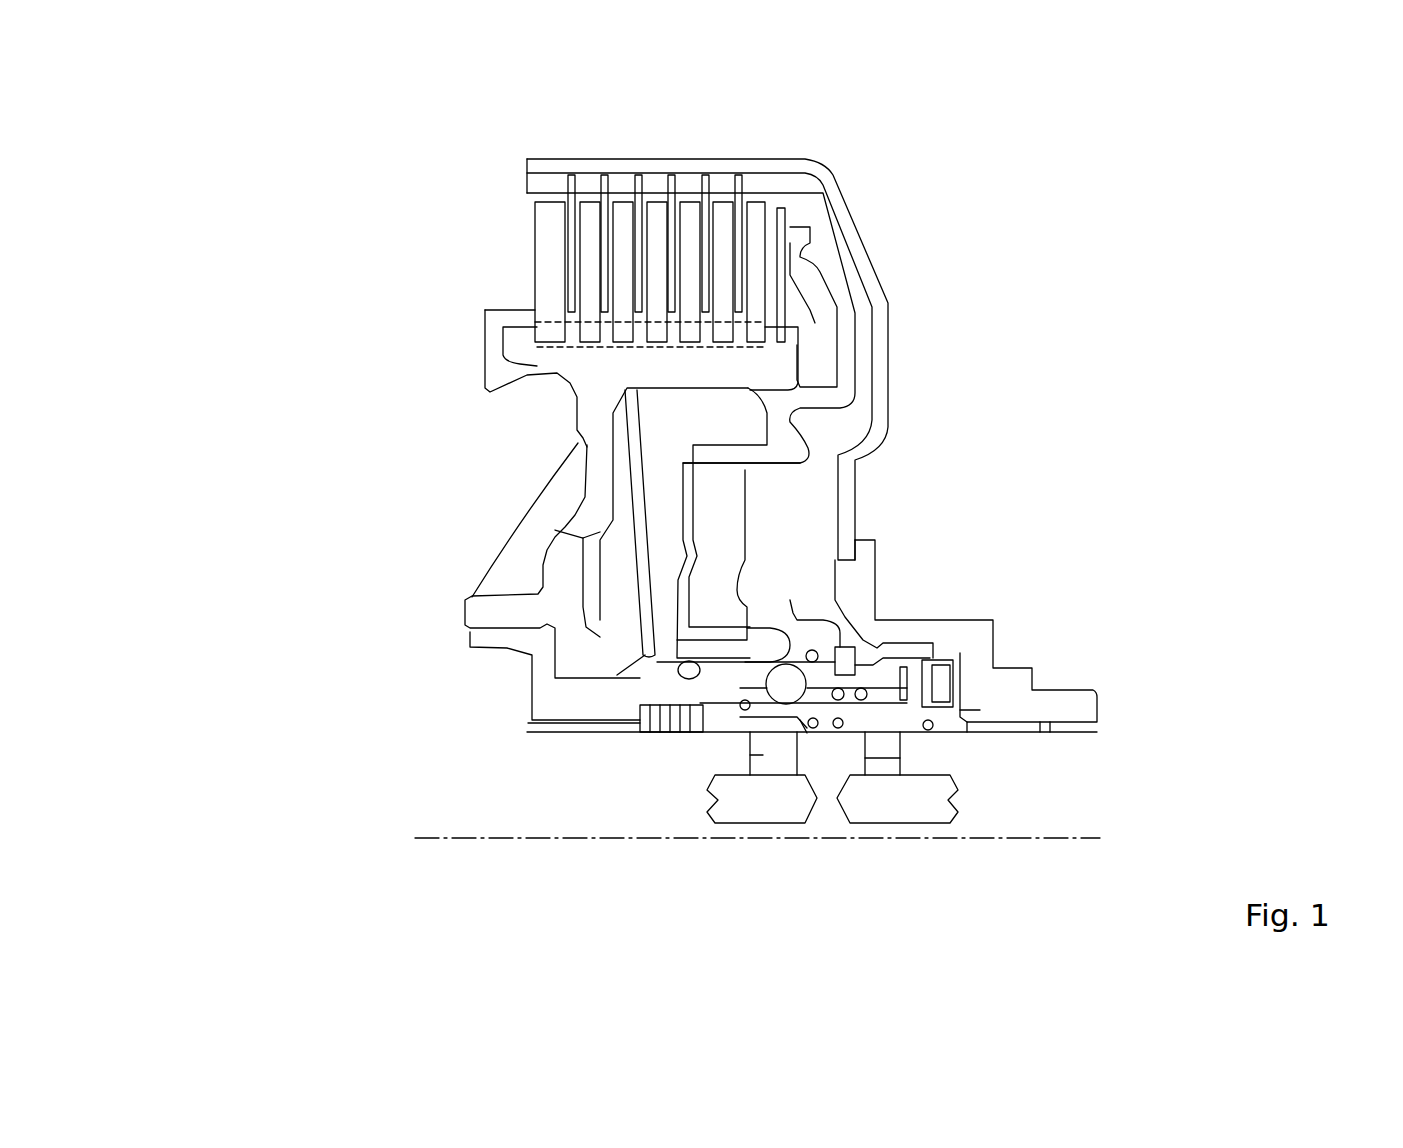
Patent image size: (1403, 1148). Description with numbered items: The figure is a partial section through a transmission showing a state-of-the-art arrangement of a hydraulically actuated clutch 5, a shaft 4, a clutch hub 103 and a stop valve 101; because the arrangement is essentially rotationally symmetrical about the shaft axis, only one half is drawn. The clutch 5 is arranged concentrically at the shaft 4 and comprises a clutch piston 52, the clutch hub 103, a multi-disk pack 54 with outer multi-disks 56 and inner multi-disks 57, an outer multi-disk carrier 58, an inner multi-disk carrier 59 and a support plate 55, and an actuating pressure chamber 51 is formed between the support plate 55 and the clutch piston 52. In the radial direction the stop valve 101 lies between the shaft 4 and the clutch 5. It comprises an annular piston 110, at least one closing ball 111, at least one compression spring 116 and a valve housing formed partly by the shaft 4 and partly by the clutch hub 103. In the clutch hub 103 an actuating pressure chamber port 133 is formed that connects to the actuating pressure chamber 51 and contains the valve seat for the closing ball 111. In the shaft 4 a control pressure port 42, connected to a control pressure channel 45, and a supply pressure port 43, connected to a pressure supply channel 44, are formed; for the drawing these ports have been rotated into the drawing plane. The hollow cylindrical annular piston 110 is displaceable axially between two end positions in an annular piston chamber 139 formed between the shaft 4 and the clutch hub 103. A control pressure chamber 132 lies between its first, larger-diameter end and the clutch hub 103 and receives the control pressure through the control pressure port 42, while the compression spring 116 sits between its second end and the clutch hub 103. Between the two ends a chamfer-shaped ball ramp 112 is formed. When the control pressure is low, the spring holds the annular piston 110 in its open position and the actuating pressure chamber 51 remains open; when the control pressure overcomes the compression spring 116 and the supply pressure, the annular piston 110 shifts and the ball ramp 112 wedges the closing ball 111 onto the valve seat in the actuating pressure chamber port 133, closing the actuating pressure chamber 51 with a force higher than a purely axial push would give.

The shaft 4 is at (1030, 768).
The hydraulically actuated clutch 5 is at (893, 470).
The control pressure port 42 is at (890, 758).
The supply pressure port 43 is at (763, 755).
The pressure supply channel 44 is at (760, 803).
The control pressure channel 45 is at (908, 807).
The actuating pressure chamber 51 is at (690, 635).
The clutch piston 52 is at (690, 567).
The multi-disk pack 54 is at (542, 213).
The support plate 55 is at (730, 520).
The outer multi-disks 56 is at (660, 213).
The inner multi-disks 57 is at (757, 215).
The outer multi-disk carrier 58 is at (878, 333).
The inner multi-disk carrier 59 is at (600, 372).
The stop valve 101 is at (880, 655).
The clutch hub 103 is at (557, 703).
The annular piston 110 is at (953, 706).
The closing ball 111 is at (766, 682).
The ball ramp 112 is at (807, 733).
The compression spring 116 is at (660, 730).
The control pressure chamber 132 is at (1005, 718).
The actuating pressure chamber port 133 is at (800, 572).
The annular piston chamber 139 is at (935, 655).